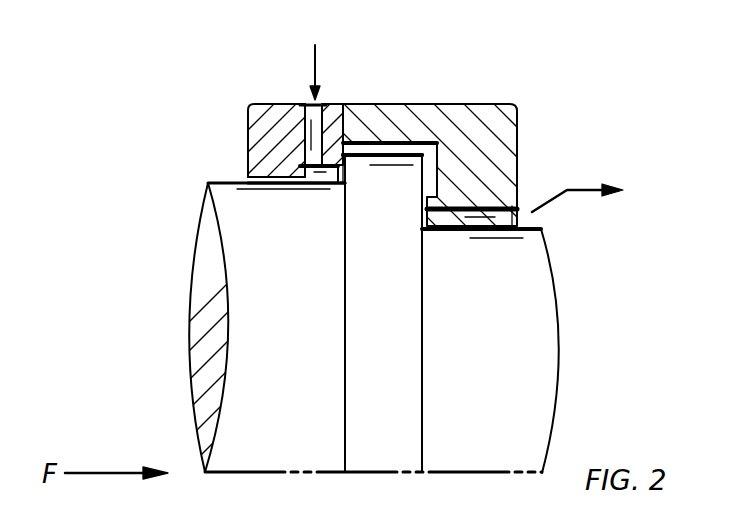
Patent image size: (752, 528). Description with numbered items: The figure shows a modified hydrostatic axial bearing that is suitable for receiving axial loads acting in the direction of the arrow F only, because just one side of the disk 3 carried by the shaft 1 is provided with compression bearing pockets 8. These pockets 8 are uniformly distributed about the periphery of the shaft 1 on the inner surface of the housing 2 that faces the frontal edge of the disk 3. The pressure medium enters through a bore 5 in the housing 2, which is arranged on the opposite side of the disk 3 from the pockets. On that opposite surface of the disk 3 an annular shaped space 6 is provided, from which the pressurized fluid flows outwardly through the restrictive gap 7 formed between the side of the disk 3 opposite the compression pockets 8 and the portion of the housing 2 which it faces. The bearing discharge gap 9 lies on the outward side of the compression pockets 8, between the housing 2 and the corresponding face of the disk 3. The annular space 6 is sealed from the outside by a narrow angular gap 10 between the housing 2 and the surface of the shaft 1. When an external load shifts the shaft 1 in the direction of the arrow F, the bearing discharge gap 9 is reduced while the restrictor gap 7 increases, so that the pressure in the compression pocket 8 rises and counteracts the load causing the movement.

The shaft 1 is at (243, 297).
The housing 2 is at (286, 112).
The disk 3 is at (387, 170).
The bore 5 is at (339, 110).
The annular shaped space 6 is at (315, 179).
The restrictive gap 7 is at (345, 162).
The compression bearing pockets 8 is at (433, 158).
The bearing discharge gap 9 is at (425, 208).
The narrow angular gap 10 is at (250, 178).